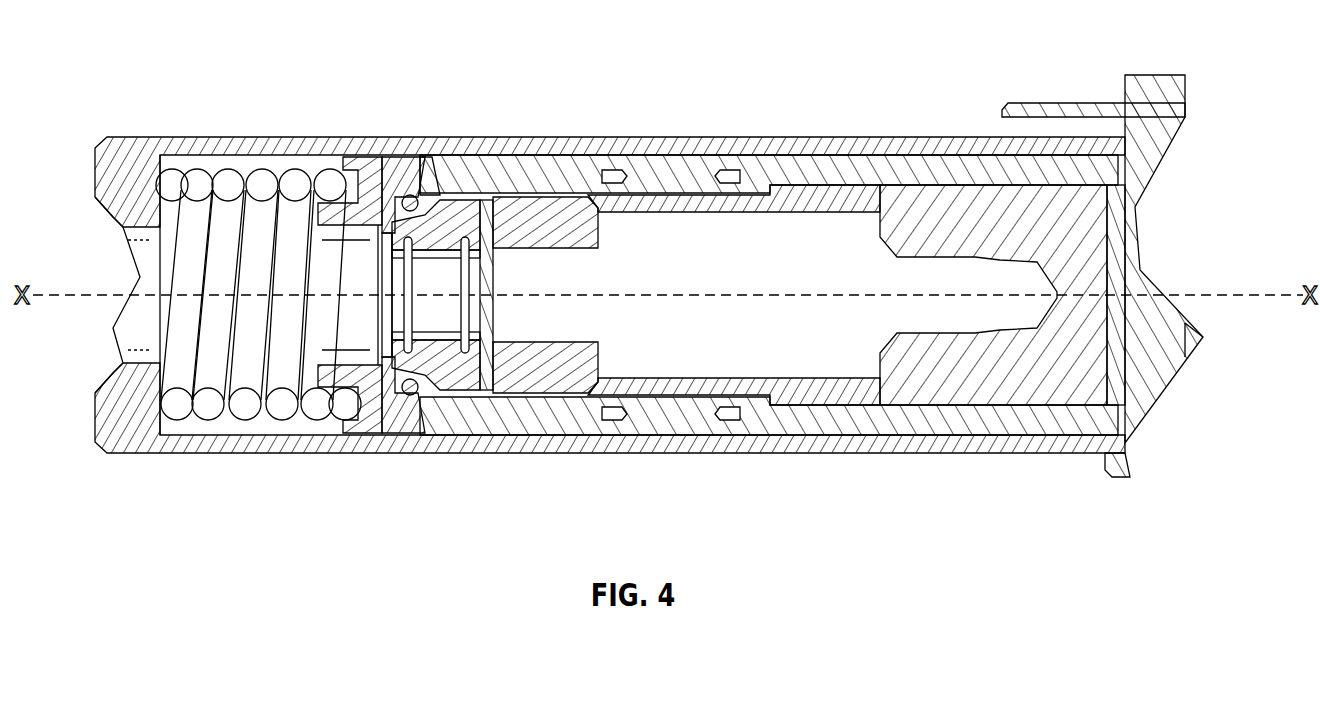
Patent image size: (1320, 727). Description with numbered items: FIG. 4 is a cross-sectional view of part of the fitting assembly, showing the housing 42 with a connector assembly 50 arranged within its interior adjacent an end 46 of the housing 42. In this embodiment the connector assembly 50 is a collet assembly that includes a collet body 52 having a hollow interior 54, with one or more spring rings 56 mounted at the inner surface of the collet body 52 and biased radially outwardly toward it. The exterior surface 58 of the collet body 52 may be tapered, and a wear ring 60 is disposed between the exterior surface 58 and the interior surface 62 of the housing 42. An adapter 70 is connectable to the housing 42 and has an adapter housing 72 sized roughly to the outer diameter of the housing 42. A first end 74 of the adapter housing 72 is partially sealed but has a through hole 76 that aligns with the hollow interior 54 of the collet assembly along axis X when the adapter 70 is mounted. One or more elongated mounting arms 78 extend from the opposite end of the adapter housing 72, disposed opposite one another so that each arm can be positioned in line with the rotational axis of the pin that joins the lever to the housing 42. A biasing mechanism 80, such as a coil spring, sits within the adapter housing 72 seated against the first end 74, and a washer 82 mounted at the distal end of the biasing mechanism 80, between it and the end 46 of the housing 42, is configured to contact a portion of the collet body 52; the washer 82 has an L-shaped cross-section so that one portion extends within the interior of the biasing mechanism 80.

The housing 42 is at (548, 156).
The end of the housing 46 is at (388, 402).
The connector assembly 50 is at (396, 214).
The collet body 52 is at (448, 214).
The hollow interior 54 is at (436, 310).
The spring rings 56 is at (418, 354).
The exterior surface of the collet body 58 is at (442, 198).
The wear ring 60 is at (410, 195).
The interior surface of the housing 62 is at (492, 216).
The adapter 70 is at (243, 462).
The adapter housing 72 is at (213, 160).
The first end of the adapter housing 74 is at (116, 203).
The through hole 76 is at (138, 330).
The mounting arms 78 is at (820, 138).
The biasing mechanism 80 is at (190, 182).
The washer 82 is at (350, 198).